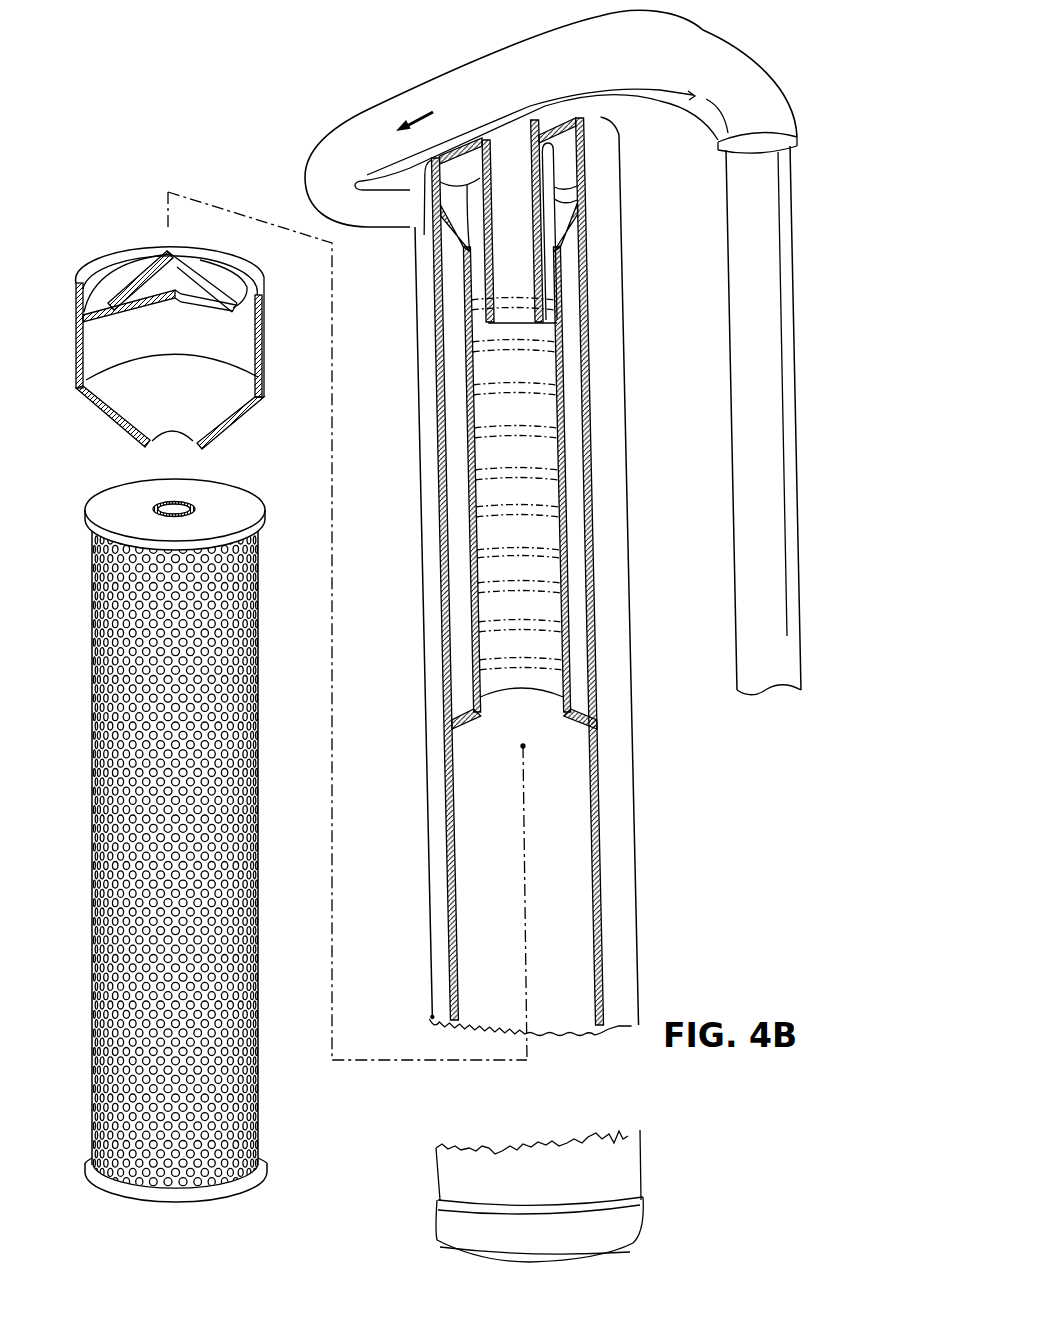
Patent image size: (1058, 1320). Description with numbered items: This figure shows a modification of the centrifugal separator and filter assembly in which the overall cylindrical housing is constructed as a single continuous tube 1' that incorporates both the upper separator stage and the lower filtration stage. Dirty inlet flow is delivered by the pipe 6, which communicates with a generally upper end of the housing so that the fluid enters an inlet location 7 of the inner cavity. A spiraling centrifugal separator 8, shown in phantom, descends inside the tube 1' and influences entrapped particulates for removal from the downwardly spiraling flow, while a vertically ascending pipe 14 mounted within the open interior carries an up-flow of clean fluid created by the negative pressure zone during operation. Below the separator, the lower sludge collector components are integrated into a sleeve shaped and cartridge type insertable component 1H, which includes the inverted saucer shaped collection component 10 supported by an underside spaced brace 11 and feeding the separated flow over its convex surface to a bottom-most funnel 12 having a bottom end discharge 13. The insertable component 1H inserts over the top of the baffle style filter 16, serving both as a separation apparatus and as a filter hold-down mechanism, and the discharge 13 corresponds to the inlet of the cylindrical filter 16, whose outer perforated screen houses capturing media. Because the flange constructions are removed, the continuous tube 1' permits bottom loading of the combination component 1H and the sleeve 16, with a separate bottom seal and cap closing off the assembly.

The sleeve shaped and cartridge type insertable component 1H is at (99, 248).
The collection component 10 is at (227, 274).
The brace 11 is at (138, 317).
The funnel 12 is at (141, 383).
The outlet 13 is at (171, 439).
The baffle style filter 16 is at (92, 718).
The pipe 6 is at (505, 97).
The inlet location 7 is at (467, 216).
The vertically ascending pipe 14 is at (549, 200).
The spiraling centrifugal separator 8 is at (535, 433).
The single continuous tube 1' is at (563, 576).